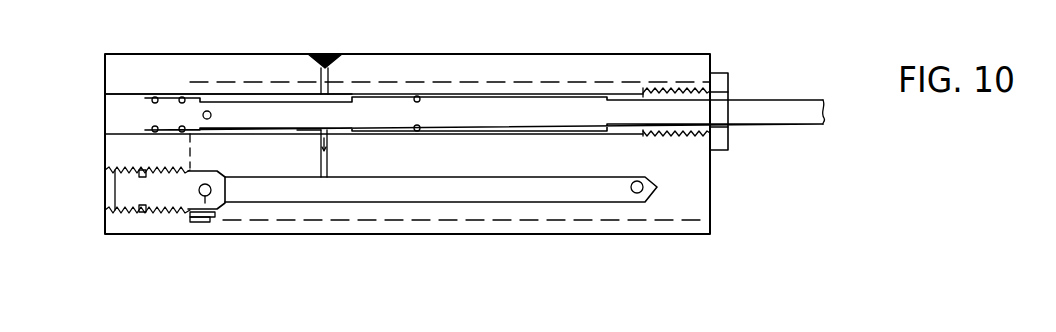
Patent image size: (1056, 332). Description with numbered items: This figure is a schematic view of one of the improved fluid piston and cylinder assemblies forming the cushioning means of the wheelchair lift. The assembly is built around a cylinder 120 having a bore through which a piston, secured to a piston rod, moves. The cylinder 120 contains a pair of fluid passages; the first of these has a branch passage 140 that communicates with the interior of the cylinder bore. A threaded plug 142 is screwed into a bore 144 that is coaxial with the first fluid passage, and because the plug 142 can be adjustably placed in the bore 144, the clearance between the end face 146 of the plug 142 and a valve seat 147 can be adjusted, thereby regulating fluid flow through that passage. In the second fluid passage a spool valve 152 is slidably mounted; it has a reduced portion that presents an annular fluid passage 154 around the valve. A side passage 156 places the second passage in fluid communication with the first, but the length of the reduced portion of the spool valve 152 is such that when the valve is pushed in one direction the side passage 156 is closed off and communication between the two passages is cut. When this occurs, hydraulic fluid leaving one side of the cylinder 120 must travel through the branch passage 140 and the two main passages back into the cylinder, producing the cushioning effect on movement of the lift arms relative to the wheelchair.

The cylinder 120 is at (467, 234).
The passage 140 is at (207, 205).
The threaded plug 142 is at (122, 183).
The bore 144 is at (115, 201).
The end face 146 is at (222, 175).
The valve seat 147 is at (222, 205).
The spool valve 152 is at (490, 108).
The annular fluid passage 154 is at (263, 98).
The side passage 156 is at (332, 152).